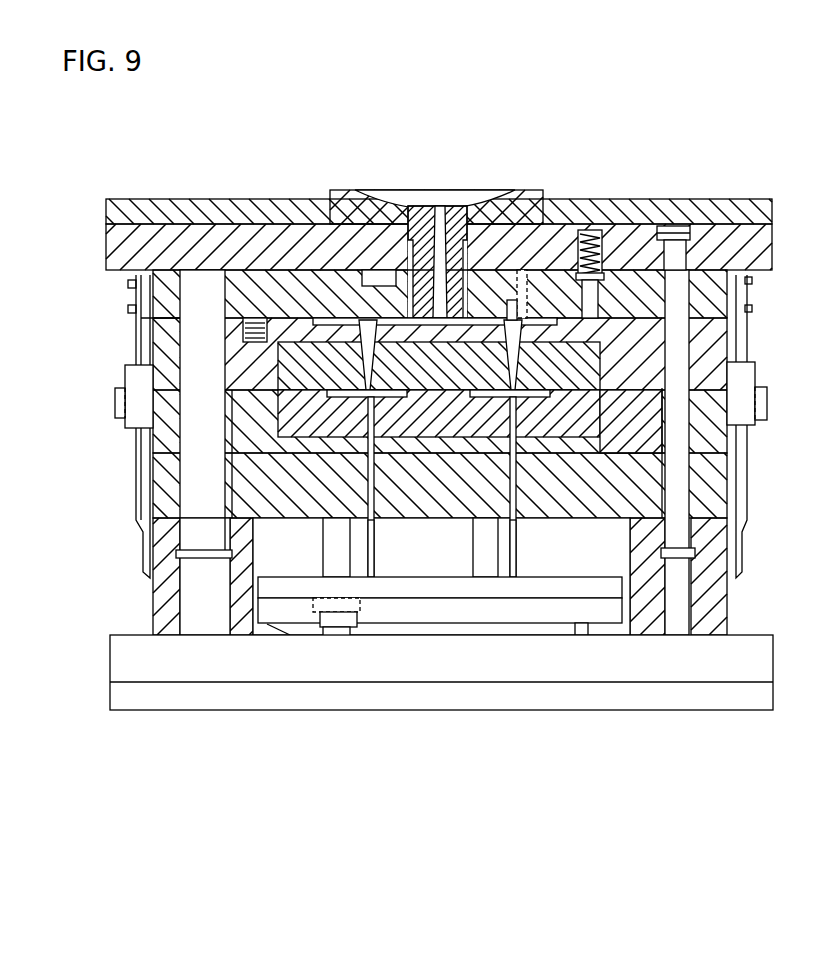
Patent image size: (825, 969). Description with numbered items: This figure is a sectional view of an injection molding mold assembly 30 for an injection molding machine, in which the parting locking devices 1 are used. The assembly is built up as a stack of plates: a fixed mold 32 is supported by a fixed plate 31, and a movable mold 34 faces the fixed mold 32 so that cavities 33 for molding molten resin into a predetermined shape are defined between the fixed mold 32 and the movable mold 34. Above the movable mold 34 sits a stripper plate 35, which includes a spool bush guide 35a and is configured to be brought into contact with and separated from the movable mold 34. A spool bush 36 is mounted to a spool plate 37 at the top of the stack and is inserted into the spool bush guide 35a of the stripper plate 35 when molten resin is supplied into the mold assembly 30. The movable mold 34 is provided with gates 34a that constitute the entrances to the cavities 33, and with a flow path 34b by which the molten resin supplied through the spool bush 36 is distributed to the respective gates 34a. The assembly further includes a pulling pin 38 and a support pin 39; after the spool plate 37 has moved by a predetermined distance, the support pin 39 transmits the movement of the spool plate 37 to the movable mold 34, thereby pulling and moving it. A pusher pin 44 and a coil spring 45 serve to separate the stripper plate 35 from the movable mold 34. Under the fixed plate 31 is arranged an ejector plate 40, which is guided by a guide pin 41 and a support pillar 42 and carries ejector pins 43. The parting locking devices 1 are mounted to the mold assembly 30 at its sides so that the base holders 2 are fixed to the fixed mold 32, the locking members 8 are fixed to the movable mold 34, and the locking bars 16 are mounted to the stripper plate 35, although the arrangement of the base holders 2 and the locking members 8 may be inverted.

The locking device 1 is at (108, 396).
The base holder 2 is at (120, 415).
The locking member 8 is at (121, 364).
The locking bar 16 is at (137, 547).
The injection molding mold assembly 30 is at (448, 445).
The fixed plate 31 is at (710, 490).
The fixed mold 32 is at (563, 415).
The cavity 33 is at (553, 378).
The movable mold 34 is at (580, 358).
The gate 34a is at (512, 335).
The flow path 34b is at (472, 240).
The stripper plate 35 is at (703, 257).
The spool bush guide 35a is at (392, 276).
The spool bush 36 is at (420, 255).
The spool plate 37 is at (742, 203).
The pulling pin 38 is at (675, 233).
The support pin 39 is at (190, 476).
The ejector plate 40 is at (497, 605).
The guide pin 41 is at (332, 540).
The support pillar 42 is at (485, 533).
The ejector pin 43 is at (370, 562).
The pusher pin 44 is at (590, 297).
The coil spring 45 is at (250, 325).